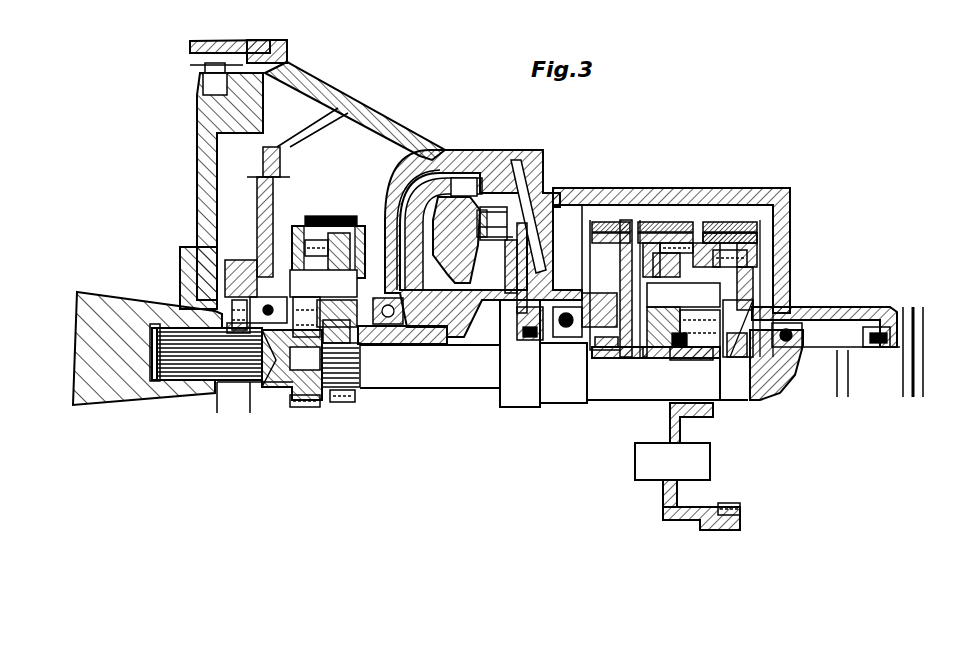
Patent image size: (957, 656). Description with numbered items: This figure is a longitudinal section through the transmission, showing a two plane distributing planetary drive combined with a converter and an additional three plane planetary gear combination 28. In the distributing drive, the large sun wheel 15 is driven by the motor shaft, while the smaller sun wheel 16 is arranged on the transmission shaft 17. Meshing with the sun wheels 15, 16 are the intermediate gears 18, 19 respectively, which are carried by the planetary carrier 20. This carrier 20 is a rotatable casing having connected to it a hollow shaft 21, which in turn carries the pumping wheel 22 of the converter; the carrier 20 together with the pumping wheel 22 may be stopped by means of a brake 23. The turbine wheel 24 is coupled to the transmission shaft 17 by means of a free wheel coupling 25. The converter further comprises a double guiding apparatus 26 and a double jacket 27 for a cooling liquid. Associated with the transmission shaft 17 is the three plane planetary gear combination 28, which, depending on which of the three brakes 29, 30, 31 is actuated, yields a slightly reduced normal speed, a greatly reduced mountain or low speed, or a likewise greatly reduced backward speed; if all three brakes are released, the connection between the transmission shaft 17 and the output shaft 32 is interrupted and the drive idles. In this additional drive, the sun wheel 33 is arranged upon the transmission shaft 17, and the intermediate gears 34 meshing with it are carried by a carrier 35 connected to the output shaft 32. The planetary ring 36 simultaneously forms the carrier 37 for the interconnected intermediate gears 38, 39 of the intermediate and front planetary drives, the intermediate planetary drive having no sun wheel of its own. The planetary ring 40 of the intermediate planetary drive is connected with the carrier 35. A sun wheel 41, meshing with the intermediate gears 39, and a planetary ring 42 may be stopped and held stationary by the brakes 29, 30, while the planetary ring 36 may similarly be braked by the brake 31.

The large sun wheel 15 is at (300, 397).
The smaller sun wheel 16 is at (339, 400).
The transmission shaft 17 is at (456, 386).
The intermediate gear 18 is at (303, 263).
The intermediate gear 19 is at (360, 230).
The planetary carrier 20 is at (296, 228).
The hollow shaft 21 is at (426, 336).
The pumping wheel 22 is at (490, 285).
The brake 23 is at (333, 216).
The turbine wheel 24 is at (546, 182).
The free wheel coupling 25 is at (567, 272).
The double guiding apparatus 26 is at (470, 178).
The double jacket 27 is at (418, 186).
The three plane planetary gear combination 28 is at (745, 182).
The brake 29 is at (611, 221).
The brake 30 is at (665, 222).
The brake 31 is at (732, 225).
The output shaft 32 is at (827, 338).
The sun wheel 33 is at (776, 365).
The intermediate gears 34 is at (790, 300).
The carrier 35 is at (770, 272).
The planetary ring 36 is at (760, 247).
The carrier 37 is at (700, 352).
The intermediate gear 38 is at (693, 345).
The intermediate gear 39 is at (632, 352).
The planetary ring 40 is at (706, 236).
The sun wheel 41 is at (660, 352).
The planetary ring 42 is at (640, 247).